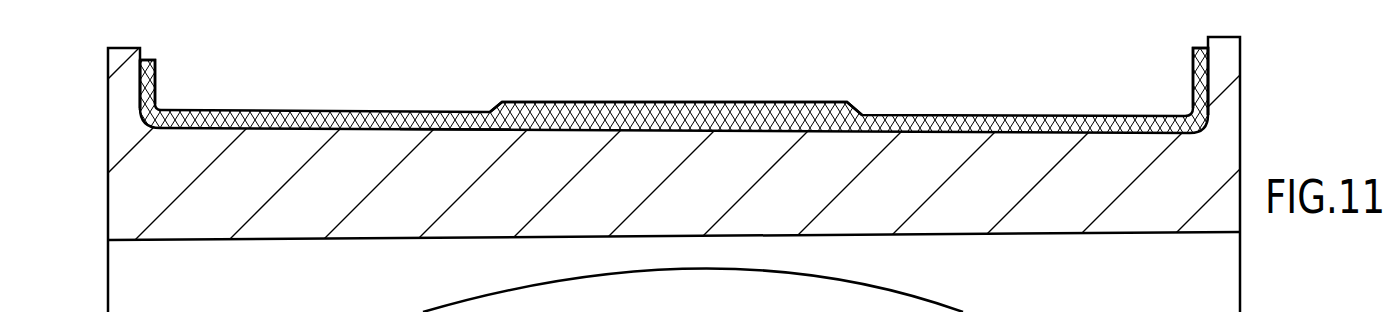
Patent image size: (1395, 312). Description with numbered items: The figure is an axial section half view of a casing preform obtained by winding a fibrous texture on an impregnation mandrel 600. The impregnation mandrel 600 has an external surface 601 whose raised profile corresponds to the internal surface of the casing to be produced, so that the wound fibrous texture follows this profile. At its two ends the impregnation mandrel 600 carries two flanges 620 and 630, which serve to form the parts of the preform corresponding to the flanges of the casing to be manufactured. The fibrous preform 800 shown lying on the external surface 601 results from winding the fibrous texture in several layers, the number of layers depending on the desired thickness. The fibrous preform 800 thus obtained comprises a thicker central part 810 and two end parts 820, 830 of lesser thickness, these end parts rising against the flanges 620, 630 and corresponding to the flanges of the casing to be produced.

The impregnation mandrel 600 is at (1247, 137).
The external surface 601 is at (456, 131).
The flange 620 is at (1230, 69).
The flange 630 is at (123, 87).
The fibrous preform 800 is at (444, 84).
The central part 810 is at (581, 101).
The end part 820 is at (1192, 73).
The end part 830 is at (157, 72).